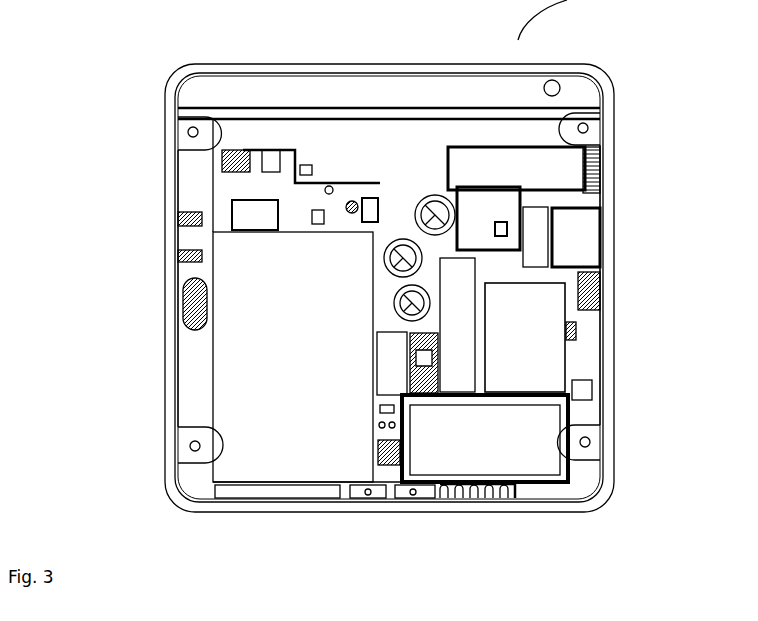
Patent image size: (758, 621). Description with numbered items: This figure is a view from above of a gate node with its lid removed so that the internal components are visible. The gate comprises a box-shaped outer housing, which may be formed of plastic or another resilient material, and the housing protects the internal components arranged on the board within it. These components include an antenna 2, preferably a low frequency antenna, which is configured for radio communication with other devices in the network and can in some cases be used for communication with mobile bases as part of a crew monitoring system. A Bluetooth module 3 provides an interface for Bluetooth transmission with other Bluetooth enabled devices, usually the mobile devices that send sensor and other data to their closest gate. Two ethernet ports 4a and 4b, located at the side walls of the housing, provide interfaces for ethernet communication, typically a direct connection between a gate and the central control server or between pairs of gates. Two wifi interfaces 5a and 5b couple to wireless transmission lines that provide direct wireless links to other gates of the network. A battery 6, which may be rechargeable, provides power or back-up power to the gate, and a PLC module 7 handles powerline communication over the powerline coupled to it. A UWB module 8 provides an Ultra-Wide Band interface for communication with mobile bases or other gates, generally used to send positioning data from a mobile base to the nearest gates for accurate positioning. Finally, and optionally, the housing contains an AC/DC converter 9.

The antenna 2 is at (572, 87).
The Bluetooth module 3 is at (460, 272).
The ethernet port 4a is at (163, 243).
The ethernet port 4b is at (620, 243).
The wifi interface 5a is at (174, 330).
The wifi interface 5b is at (602, 335).
The battery 6 is at (257, 369).
The PLC module 7 is at (185, 465).
The UWB module 8 is at (525, 356).
The AC/DC converter 9 is at (528, 442).